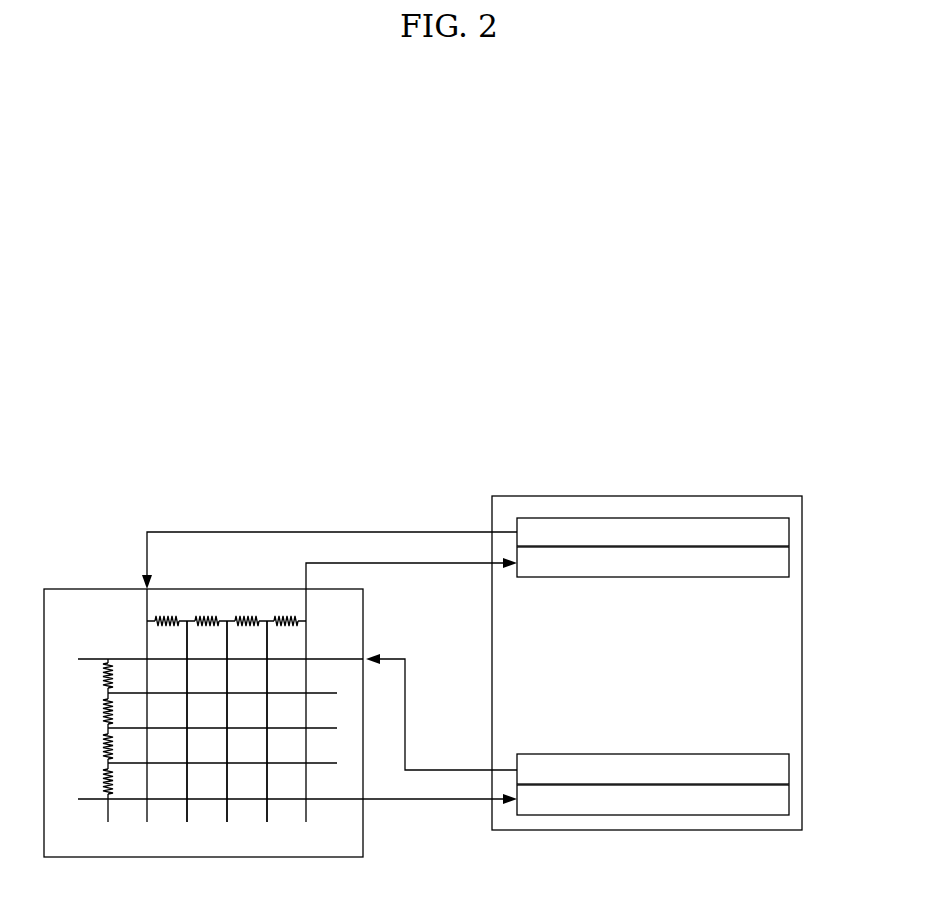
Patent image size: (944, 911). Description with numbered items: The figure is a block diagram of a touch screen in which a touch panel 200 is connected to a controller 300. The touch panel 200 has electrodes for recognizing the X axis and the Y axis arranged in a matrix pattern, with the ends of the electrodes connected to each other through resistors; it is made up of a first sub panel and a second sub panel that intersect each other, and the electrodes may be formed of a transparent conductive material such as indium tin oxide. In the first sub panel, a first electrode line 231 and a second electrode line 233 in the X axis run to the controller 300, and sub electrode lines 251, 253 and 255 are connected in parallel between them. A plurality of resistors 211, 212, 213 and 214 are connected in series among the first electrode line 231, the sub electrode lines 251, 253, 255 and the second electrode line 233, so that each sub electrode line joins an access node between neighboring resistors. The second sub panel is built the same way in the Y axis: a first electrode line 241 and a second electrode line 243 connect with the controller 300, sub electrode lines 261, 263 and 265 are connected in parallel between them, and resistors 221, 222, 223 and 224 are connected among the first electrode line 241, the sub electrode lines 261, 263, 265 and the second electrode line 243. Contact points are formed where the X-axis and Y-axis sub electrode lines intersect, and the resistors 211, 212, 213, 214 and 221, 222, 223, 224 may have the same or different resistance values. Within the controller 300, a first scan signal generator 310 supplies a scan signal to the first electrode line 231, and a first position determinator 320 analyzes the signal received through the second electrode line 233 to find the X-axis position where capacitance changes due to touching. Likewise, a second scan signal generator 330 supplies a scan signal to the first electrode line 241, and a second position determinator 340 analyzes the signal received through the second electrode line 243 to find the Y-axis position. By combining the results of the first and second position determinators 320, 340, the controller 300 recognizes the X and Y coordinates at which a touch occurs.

The touch panel 200 is at (73, 589).
The resistor 211 is at (167, 608).
The resistor 212 is at (207, 608).
The resistor 213 is at (246, 608).
The resistor 214 is at (286, 608).
The resistor 221 is at (93, 676).
The resistor 222 is at (93, 712).
The resistor 223 is at (93, 747).
The resistor 224 is at (93, 782).
The first electrode line in the X axis 231 is at (430, 532).
The second electrode line in the X axis 233 is at (430, 563).
The first electrode line in the Y axis 241 is at (430, 770).
The second electrode line in the Y axis 243 is at (430, 799).
The sub electrode line 251 is at (188, 643).
The sub electrode line 253 is at (228, 643).
The sub electrode line 255 is at (268, 643).
The sub electrode line 261 is at (127, 693).
The sub electrode line 263 is at (127, 728).
The sub electrode line 265 is at (127, 763).
The controller 300 is at (655, 496).
The first scan signal generator 310 is at (789, 530).
The first position determinator 320 is at (789, 560).
The second scan signal generator 330 is at (789, 768).
The second position determinator 340 is at (789, 798).